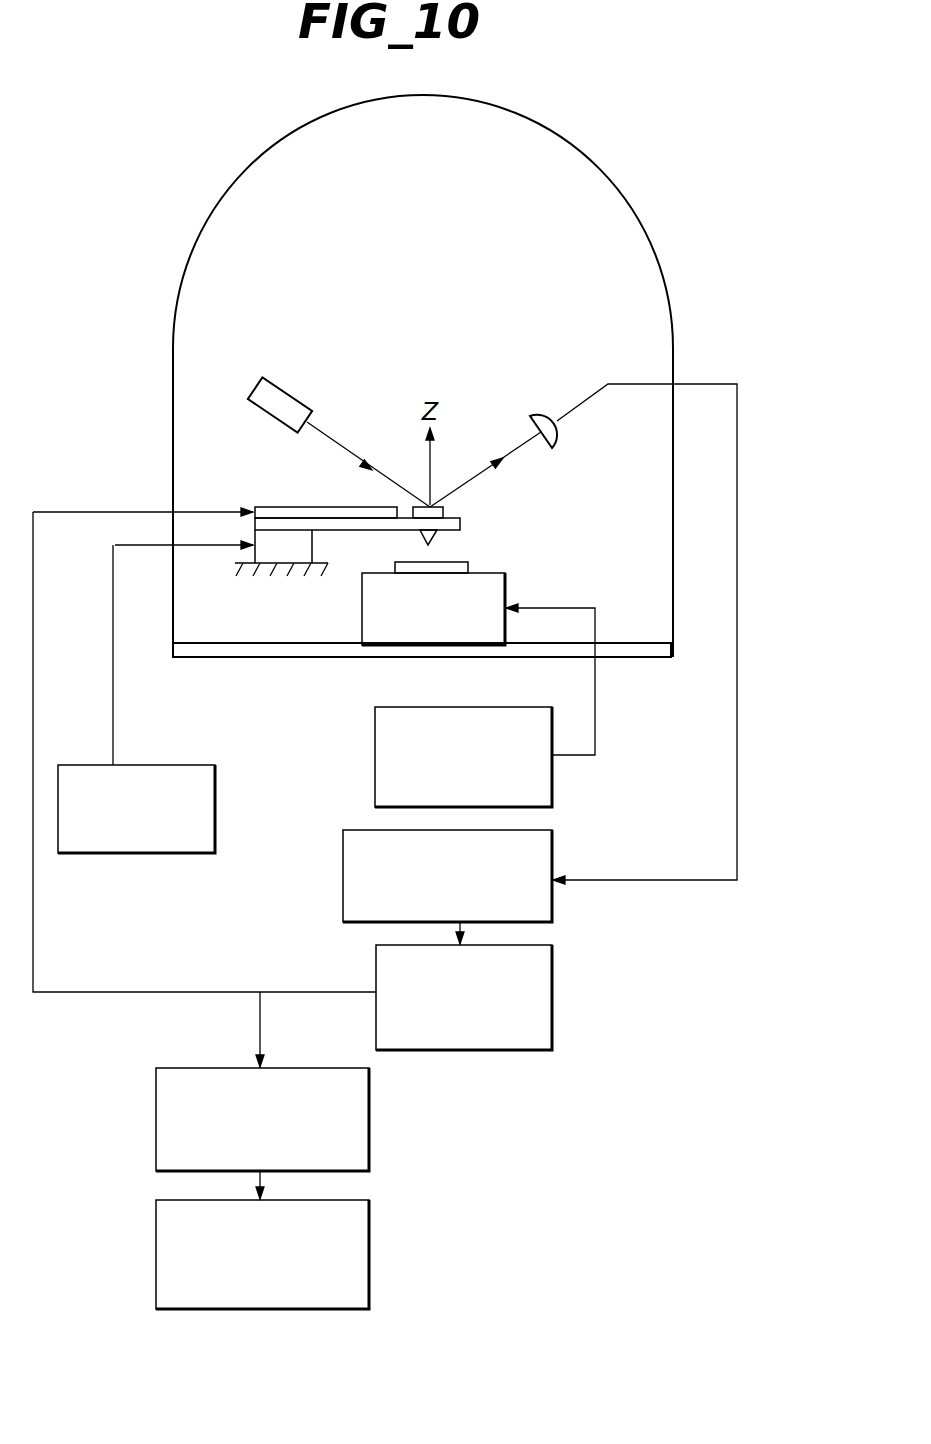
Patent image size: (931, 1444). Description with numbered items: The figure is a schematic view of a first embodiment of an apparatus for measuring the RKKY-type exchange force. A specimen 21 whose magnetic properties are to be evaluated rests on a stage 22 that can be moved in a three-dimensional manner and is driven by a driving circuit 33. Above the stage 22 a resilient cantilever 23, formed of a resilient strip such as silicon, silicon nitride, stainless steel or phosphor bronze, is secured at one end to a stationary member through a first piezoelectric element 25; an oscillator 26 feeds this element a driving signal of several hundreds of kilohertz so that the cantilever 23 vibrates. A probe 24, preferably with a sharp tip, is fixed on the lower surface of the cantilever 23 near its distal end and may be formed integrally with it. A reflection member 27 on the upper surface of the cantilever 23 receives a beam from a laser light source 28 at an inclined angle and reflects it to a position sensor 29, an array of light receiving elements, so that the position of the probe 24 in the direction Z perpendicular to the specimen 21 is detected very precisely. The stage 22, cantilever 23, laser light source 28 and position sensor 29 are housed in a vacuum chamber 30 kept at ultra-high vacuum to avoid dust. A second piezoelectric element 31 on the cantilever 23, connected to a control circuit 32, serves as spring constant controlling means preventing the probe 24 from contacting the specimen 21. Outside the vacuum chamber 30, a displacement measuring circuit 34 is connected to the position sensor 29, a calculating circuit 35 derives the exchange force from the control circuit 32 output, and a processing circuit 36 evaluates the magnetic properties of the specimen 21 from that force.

The specimen 21 is at (457, 567).
The stage 22 is at (358, 615).
The resilient cantilever 23 is at (363, 530).
The probe 24 is at (437, 540).
The first piezoelectric element 25 is at (277, 548).
The oscillator 26 is at (137, 855).
The reflection member 27 is at (443, 513).
The laser light source 28 is at (290, 393).
The position sensor 29 is at (543, 407).
The vacuum chamber 30 is at (660, 262).
The second piezoelectric element 31 is at (330, 508).
The control circuit 32 is at (554, 999).
The driving circuit 33 is at (375, 753).
The displacement measuring circuit 34 is at (342, 883).
The calculating circuit 35 is at (370, 1128).
The processing circuit 36 is at (370, 1258).